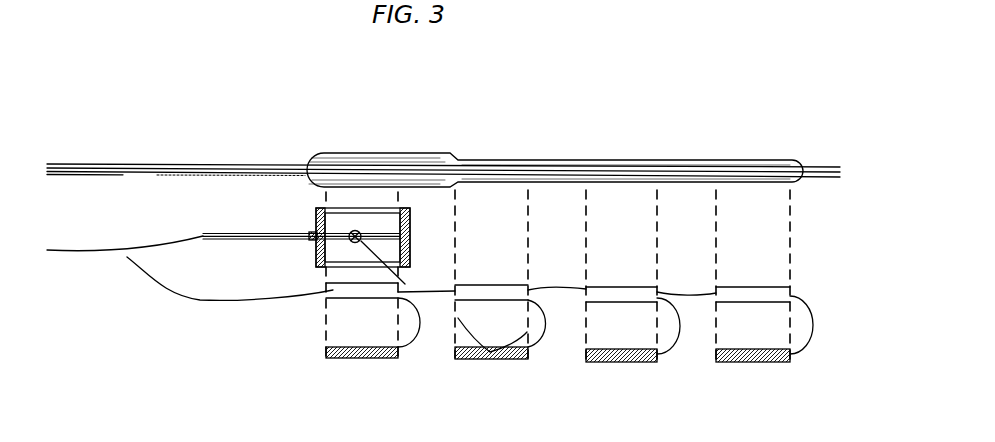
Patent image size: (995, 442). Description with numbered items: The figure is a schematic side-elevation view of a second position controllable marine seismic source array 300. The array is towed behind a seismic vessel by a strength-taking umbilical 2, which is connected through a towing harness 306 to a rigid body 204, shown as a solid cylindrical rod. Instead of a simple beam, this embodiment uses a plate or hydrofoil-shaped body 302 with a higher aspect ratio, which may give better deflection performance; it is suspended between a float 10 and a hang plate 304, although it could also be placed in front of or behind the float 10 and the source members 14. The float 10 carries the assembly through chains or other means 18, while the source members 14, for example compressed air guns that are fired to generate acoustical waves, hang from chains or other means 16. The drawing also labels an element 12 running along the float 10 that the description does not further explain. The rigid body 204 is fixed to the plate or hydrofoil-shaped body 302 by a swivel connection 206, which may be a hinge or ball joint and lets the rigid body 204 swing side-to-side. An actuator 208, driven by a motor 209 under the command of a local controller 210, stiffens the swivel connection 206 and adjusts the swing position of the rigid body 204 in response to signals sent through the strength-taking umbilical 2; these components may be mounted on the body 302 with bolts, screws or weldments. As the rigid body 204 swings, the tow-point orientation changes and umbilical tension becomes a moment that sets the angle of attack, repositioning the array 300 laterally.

The strength-taking umbilical 2 is at (141, 275).
The float 10 is at (430, 153).
The stylet 12 is at (99, 164).
The source members 14 is at (475, 360).
The chains or other means 16 is at (490, 350).
The chains or other means 18 is at (660, 212).
The rigid body 204 is at (233, 232).
The swivel connection 206 is at (311, 232).
The actuator 208 is at (333, 233).
The motor 209 is at (355, 230).
The local controller 210 is at (385, 233).
The position controllable marine seismic source array 300 is at (531, 129).
The plate or hydrofoil-shaped body 302 is at (317, 250).
The hang plate 304 is at (482, 286).
The towing harness 306 is at (165, 243).